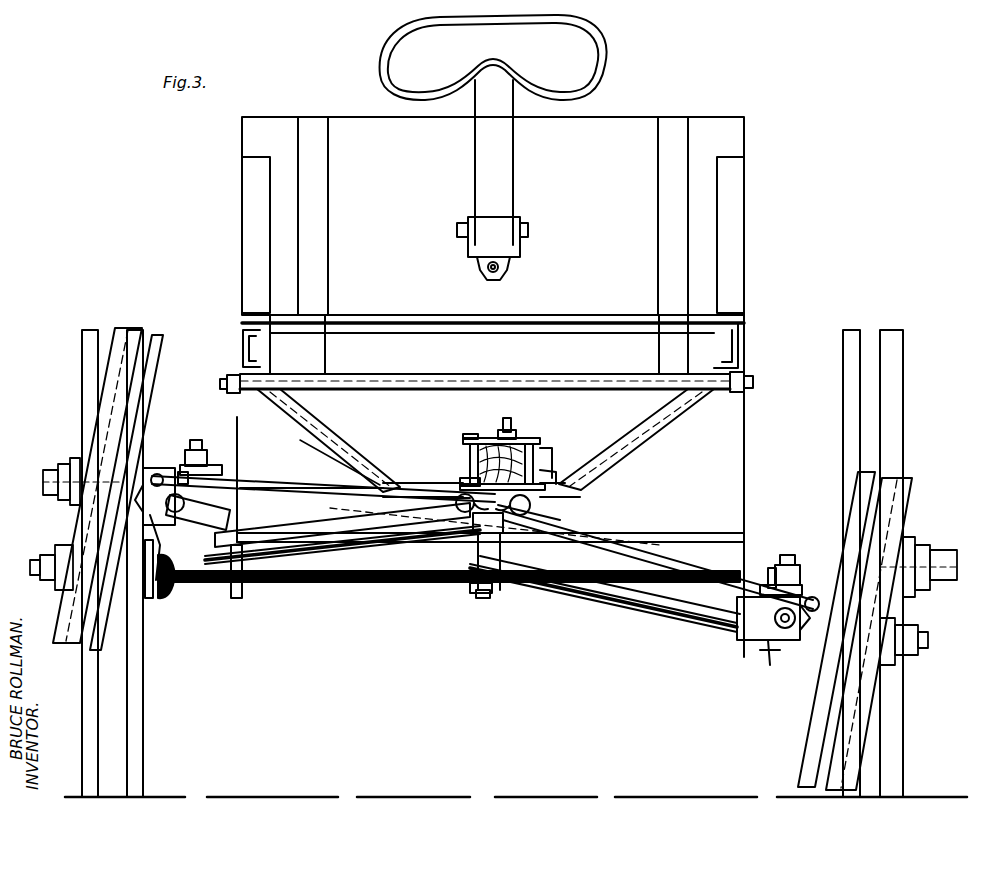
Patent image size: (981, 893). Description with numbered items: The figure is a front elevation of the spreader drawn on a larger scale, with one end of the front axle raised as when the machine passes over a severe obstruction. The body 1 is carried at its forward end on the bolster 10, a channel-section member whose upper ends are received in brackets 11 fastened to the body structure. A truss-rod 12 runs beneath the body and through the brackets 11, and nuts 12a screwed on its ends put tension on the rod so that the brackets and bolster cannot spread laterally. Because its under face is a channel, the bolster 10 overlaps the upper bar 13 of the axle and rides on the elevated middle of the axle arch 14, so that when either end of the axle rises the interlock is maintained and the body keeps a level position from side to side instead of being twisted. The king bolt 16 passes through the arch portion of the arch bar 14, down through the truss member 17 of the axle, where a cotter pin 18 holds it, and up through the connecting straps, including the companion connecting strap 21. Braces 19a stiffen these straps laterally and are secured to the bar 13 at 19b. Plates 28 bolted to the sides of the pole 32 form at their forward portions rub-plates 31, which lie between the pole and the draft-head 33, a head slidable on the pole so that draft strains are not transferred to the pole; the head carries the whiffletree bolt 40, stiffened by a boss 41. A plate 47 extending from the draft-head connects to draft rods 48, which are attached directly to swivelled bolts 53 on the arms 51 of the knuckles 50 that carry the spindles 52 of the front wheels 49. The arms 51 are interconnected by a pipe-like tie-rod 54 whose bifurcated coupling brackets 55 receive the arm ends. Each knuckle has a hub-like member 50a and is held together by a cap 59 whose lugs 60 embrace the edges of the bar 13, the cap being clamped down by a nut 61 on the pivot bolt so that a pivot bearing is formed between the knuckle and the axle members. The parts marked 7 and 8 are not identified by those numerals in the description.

The body / seat support 1 is at (316, 122).
The axle frame 7 is at (308, 584).
The vertical post 8 is at (80, 369).
The bolster 10 is at (388, 470).
The brackets 11 is at (270, 394).
The truss-rod 12 is at (592, 377).
The nuts 12a is at (232, 374).
The upper bar of the axle 13 is at (347, 495).
The axle arch 14 is at (428, 530).
The king bolt 16 is at (478, 594).
The truss member of the axle 17 is at (566, 602).
The cotter pin 18 is at (488, 596).
The braces 19a is at (462, 496).
The brace attachment to arch bar 19b is at (445, 496).
The companion connecting strap 21 is at (462, 523).
The plates 28 is at (553, 458).
The rub-plates 31 is at (465, 470).
The pole 32 is at (532, 442).
The draft-head 33 is at (470, 436).
The whiffletree bolt 40 is at (507, 422).
The boss 41 is at (499, 436).
The plate 47 is at (552, 470).
The draft rods 48 is at (301, 479).
The front wheels 49 is at (121, 330).
The knuckles 50 is at (215, 480).
The hub-like member 50a is at (200, 462).
The draft arms 51 is at (166, 550).
The spindles 52 is at (55, 470).
The swivelled bolts 53 is at (150, 480).
The tie-rod 54 is at (362, 548).
The coupling brackets 55 is at (200, 528).
The cap 59 is at (208, 466).
The lugs 60 is at (181, 470).
The nut 61 is at (196, 438).